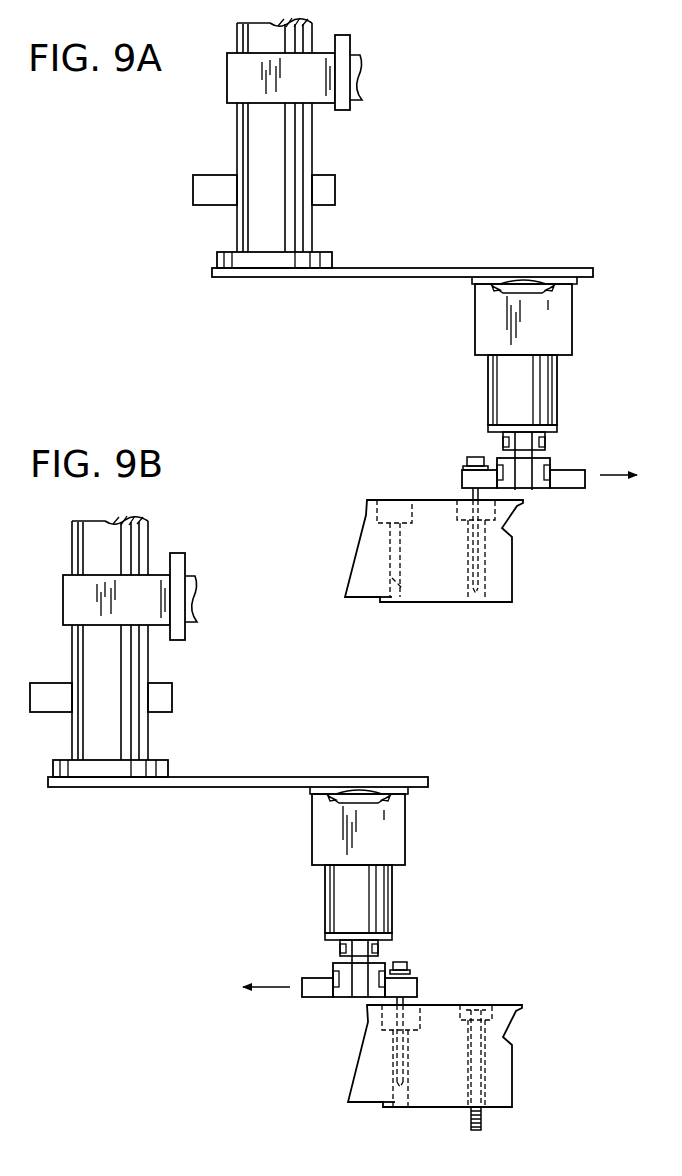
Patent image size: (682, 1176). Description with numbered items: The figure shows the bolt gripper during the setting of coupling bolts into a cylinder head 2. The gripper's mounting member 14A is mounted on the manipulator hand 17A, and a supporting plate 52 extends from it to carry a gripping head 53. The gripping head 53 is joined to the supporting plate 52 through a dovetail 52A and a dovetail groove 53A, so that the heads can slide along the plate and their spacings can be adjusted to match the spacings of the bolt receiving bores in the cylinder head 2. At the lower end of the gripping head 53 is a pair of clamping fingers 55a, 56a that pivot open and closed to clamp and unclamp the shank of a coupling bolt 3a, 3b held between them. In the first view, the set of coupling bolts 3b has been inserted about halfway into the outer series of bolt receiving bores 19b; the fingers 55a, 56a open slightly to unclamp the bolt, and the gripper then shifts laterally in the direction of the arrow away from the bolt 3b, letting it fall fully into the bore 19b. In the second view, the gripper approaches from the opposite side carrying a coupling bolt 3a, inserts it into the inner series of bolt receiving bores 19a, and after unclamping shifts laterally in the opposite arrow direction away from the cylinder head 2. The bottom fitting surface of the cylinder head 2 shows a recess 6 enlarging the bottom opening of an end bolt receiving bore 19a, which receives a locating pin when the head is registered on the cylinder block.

In FIG. 9A, the cylinder head 2 is at (503, 570).
In FIG. 9B, the cylinder head 2 is at (503, 1081).
In FIG. 9B, the coupling bolt 3a is at (400, 961).
In FIG. 9A, the coupling bolt 3b is at (474, 457).
In FIG. 9B, the coupling bolt 3b is at (480, 1008).
In FIG. 9A, the recess 6 is at (391, 604).
In FIG. 9B, the recess 6 is at (387, 1110).
In FIG. 9A, the mounting member 14A is at (329, 252).
In FIG. 9B, the mounting member 14A is at (166, 760).
In FIG. 9A, the manipulator hand 17A is at (300, 158).
In FIG. 9B, the manipulator hand 17A is at (148, 663).
In FIG. 9A, the bolt receiving bore 19a is at (418, 605).
In FIG. 9B, the bolt receiving bore 19a is at (393, 1077).
In FIG. 9A, the bolt receiving bore 19b is at (476, 605).
In FIG. 9B, the bolt receiving bore 19b is at (467, 1099).
In FIG. 9A, the supporting plate 52 is at (430, 268).
In FIG. 9B, the supporting plate 52 is at (272, 777).
In FIG. 9A, the dovetail 52A is at (526, 284).
In FIG. 9B, the dovetail 52A is at (354, 794).
In FIG. 9A, the gripping head 53 is at (549, 392).
In FIG. 9B, the gripping head 53 is at (381, 897).
In FIG. 9A, the dovetail groove 53A is at (549, 289).
In FIG. 9B, the dovetail groove 53A is at (387, 799).
In FIG. 9A, the clamping finger 55a is at (575, 489).
In FIG. 9B, the clamping finger 55a is at (440, 978).
In FIG. 9A, the clamping finger 56a is at (462, 481).